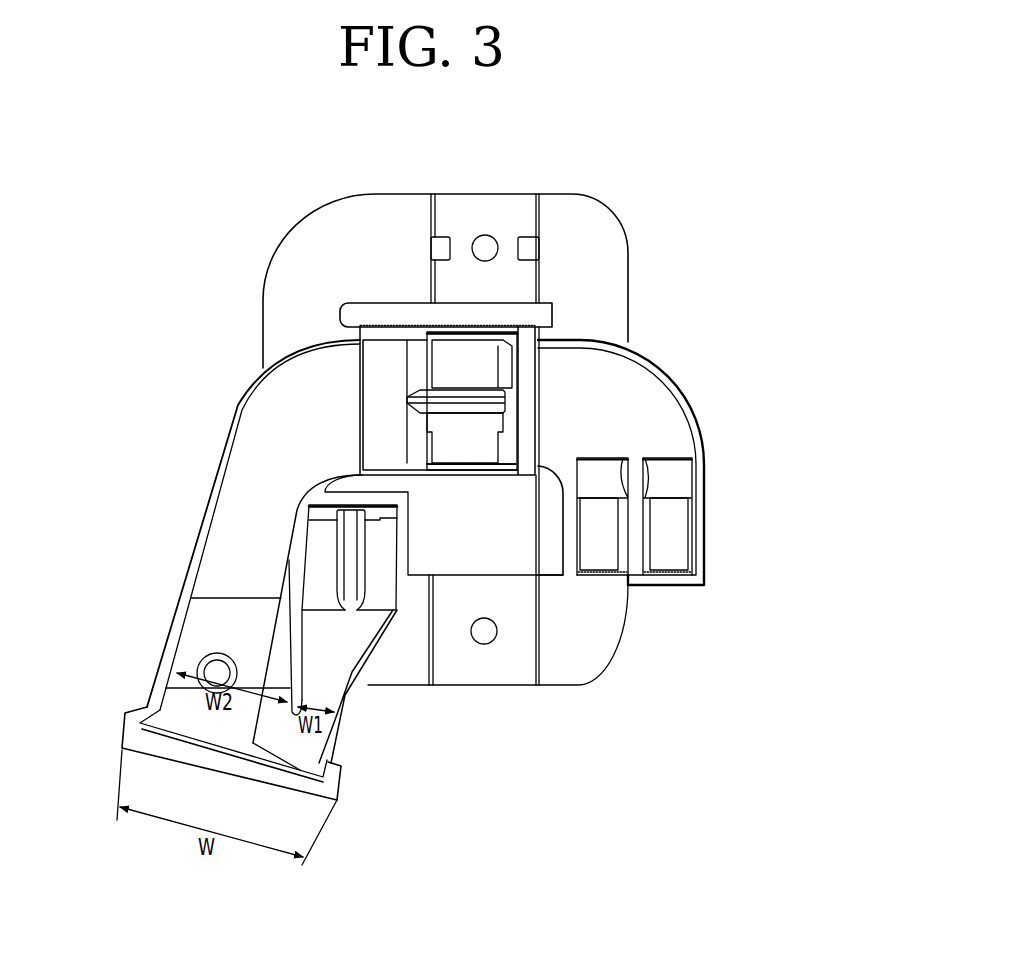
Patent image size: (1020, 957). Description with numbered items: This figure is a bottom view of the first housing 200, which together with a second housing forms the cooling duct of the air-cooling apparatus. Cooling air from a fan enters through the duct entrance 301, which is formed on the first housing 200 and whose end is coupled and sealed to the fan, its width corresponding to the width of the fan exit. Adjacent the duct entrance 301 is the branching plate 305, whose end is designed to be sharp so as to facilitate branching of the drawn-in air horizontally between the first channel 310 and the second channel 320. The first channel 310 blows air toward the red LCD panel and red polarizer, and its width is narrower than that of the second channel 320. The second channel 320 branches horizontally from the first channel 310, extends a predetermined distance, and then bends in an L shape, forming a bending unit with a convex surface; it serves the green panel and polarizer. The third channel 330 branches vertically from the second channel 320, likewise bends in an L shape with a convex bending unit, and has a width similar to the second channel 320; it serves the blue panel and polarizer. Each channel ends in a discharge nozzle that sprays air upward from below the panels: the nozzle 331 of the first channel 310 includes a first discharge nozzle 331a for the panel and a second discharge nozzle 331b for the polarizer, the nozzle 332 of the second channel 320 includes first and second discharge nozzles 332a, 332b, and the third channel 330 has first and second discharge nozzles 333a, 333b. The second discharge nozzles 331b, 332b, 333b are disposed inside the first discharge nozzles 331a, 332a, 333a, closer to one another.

The first housing 200 is at (595, 222).
The second channel 320 is at (376, 405).
The discharge nozzle of the second channel 332 is at (732, 342).
The first discharge nozzle 332a is at (478, 376).
The second discharge nozzle 332b is at (478, 446).
The third channel 330 is at (656, 430).
The first discharge nozzle 333a is at (663, 545).
The second discharge nozzle 333b is at (595, 545).
The discharge nozzle of the first channel 331 is at (460, 755).
The first discharge nozzle 331a is at (316, 561).
The second discharge nozzle 331b is at (374, 561).
The first channel 310 is at (328, 642).
The duct entrance 301 is at (192, 747).
The branching plate 305 is at (317, 748).